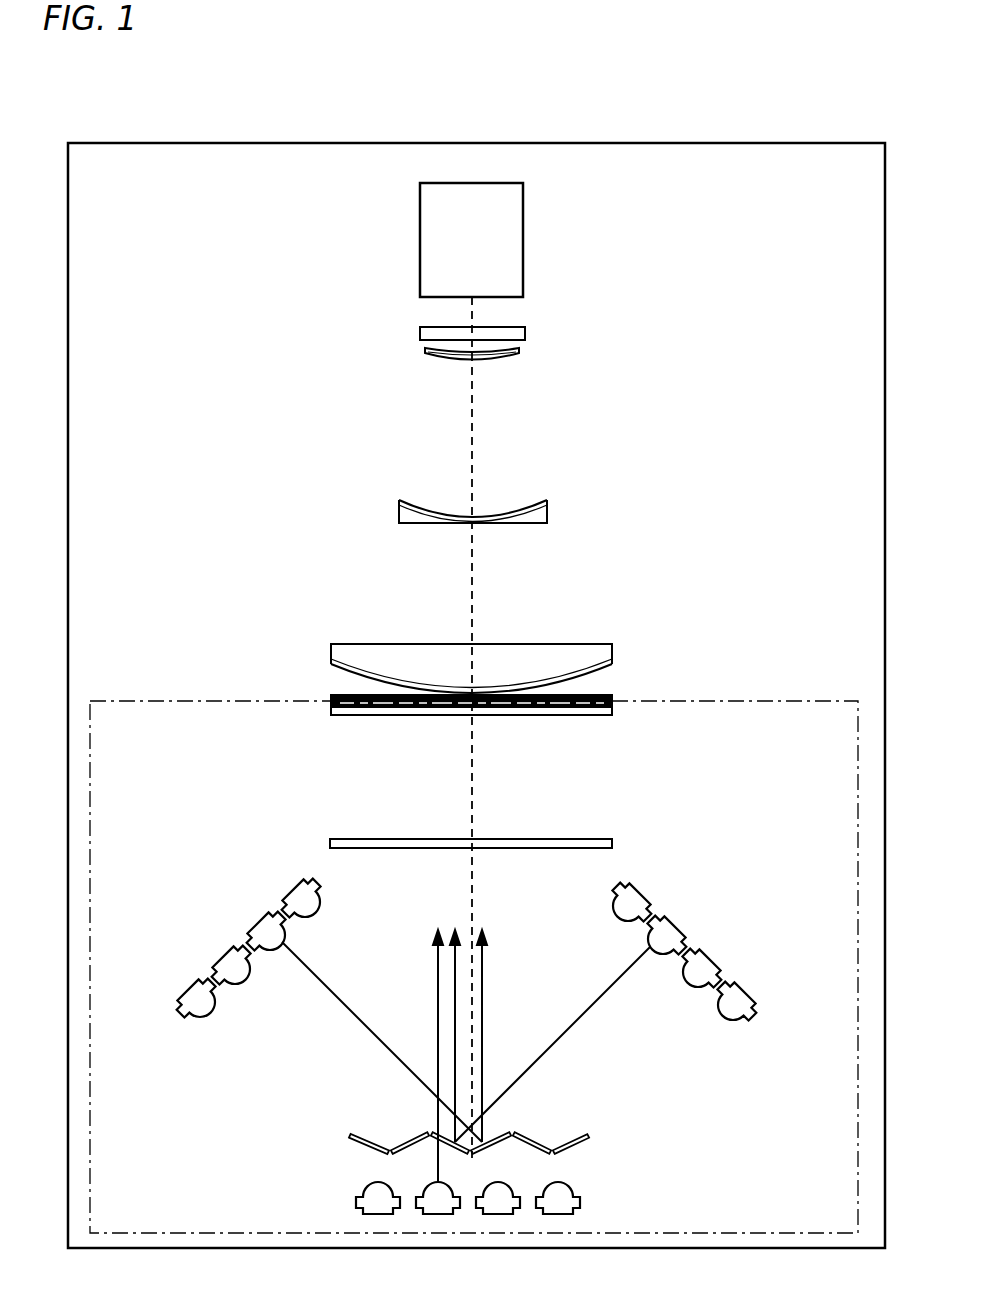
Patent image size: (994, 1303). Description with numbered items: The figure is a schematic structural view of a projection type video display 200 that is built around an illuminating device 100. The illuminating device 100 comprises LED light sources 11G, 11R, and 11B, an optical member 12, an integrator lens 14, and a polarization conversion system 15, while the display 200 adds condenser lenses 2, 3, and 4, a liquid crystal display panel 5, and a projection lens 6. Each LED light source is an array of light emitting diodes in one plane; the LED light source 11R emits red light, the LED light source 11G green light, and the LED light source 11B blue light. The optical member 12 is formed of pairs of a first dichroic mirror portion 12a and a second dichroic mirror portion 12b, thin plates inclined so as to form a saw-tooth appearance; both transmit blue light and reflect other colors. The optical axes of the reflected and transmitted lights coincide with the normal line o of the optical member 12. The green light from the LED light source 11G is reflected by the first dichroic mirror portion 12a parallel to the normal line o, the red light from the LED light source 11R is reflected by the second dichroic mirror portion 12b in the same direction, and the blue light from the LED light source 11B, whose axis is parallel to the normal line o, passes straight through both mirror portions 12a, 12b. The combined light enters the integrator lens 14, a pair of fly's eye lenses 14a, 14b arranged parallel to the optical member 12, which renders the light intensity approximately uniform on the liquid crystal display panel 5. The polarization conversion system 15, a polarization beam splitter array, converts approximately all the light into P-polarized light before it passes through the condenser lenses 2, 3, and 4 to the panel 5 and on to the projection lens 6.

The projection type video display 200 is at (885, 615).
The illuminating device 100 is at (187, 706).
The normal line o is at (475, 889).
The projection lens 6 is at (523, 243).
The liquid crystal display panel 5 is at (525, 333).
The condenser lens 4 is at (519, 355).
The condenser lens 3 is at (547, 513).
The condenser lens 2 is at (612, 654).
The polarization conversion system 15 is at (613, 702).
The integrator lens 14 is at (423, 771).
The incidence-side fly's eye lens 14a is at (331, 838).
The fly's eye lens 14b is at (331, 712).
The LED light source 11G is at (224, 938).
The LED light source 11R is at (727, 937).
The LED light source 11B is at (340, 1200).
The optical member 12 is at (493, 1120).
The first dichroic mirror portion 12a is at (407, 1141).
The second dichroic mirror portion 12b is at (372, 1140).